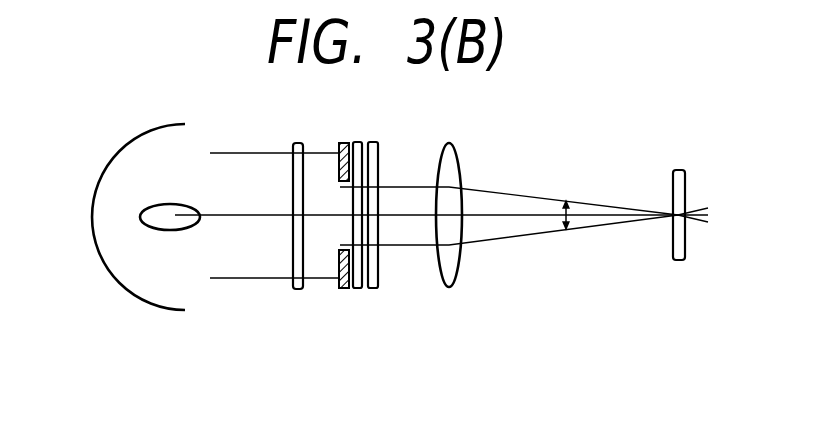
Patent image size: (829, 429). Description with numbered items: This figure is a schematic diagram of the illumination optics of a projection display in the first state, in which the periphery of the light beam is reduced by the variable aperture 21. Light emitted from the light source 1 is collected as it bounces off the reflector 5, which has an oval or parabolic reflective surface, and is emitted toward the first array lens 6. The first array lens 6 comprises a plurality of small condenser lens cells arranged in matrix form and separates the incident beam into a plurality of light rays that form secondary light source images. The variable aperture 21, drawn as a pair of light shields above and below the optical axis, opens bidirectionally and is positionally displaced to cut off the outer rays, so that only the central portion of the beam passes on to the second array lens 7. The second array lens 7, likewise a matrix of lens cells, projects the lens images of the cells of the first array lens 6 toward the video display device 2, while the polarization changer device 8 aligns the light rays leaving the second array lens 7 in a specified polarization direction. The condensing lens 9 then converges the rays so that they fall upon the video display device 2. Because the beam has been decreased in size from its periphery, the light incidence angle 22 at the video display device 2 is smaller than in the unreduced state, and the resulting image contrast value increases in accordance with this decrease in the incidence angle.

The light source 1 is at (150, 216).
The video display device 2 is at (682, 170).
The reflector 5 is at (112, 266).
The first array lens 6 is at (297, 290).
The second array lens 7 is at (356, 290).
The polarization changer device 8 is at (382, 290).
The condensing lens 9 is at (447, 160).
The variable aperture 21 is at (343, 290).
The light incidence angle 22 is at (580, 213).